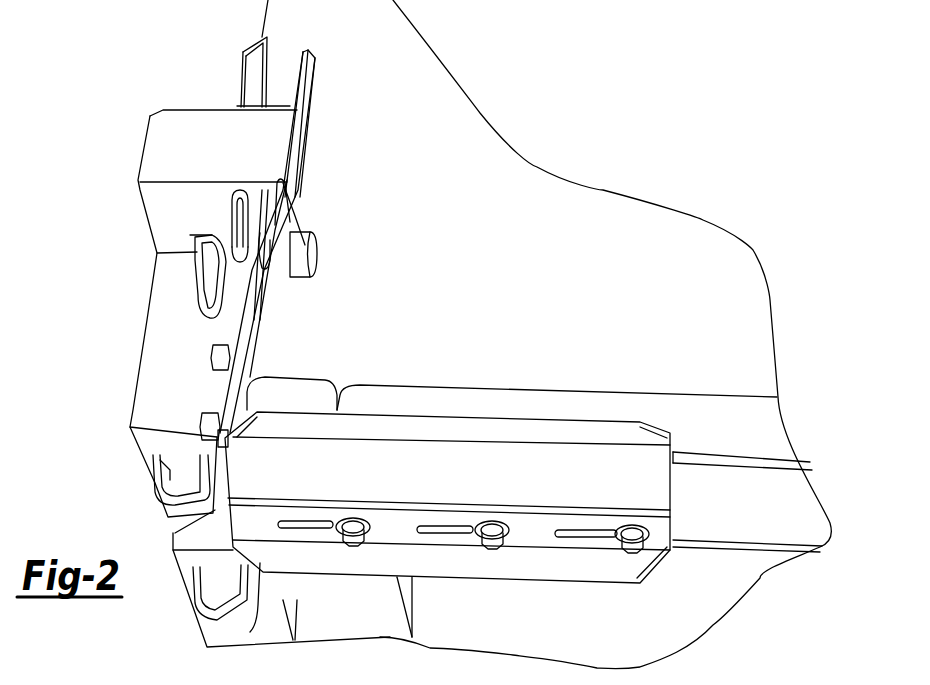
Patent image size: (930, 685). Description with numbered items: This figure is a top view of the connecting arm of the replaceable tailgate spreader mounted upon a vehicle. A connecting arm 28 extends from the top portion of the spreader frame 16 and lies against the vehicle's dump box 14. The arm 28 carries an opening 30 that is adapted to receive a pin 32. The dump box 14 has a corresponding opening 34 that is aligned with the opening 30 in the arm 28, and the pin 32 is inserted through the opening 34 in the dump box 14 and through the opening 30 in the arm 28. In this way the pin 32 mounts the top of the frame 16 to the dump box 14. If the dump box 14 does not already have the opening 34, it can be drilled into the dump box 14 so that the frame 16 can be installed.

The dump box 14 is at (135, 370).
The frame 16 is at (712, 460).
The connecting arm 28 is at (230, 323).
The opening 30 is at (258, 225).
The pin 32 is at (190, 237).
The opening 34 is at (230, 207).